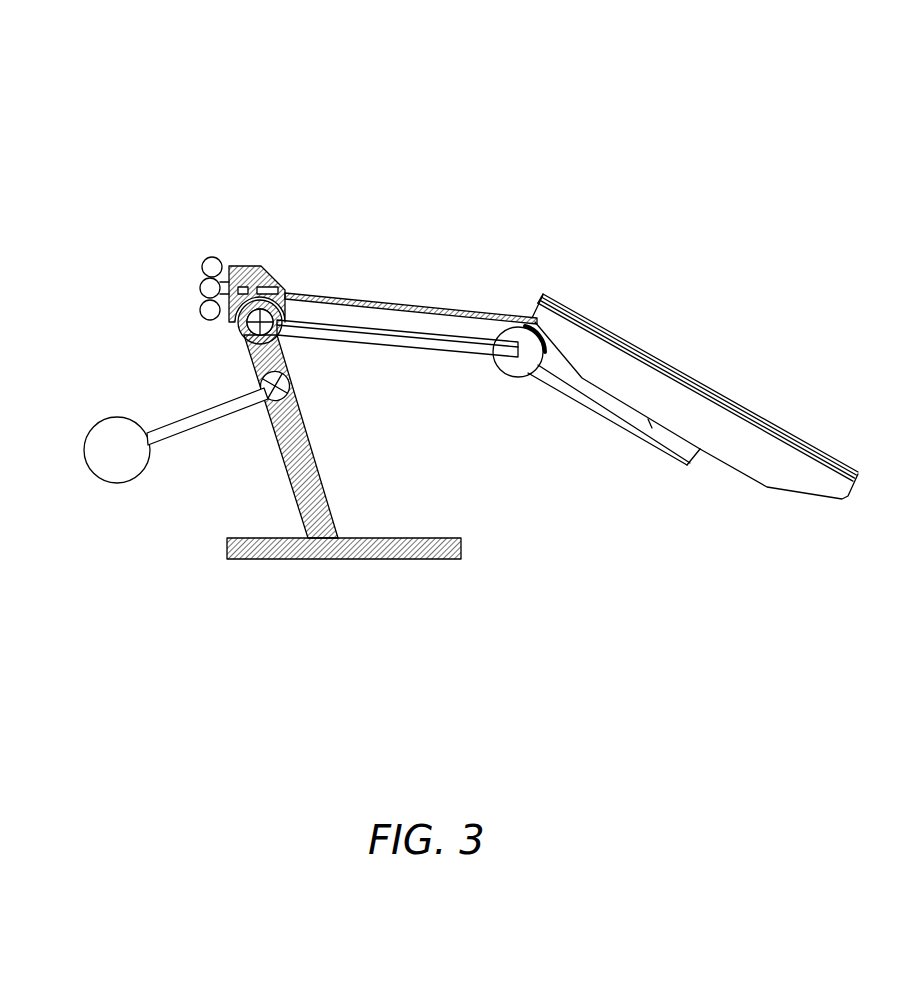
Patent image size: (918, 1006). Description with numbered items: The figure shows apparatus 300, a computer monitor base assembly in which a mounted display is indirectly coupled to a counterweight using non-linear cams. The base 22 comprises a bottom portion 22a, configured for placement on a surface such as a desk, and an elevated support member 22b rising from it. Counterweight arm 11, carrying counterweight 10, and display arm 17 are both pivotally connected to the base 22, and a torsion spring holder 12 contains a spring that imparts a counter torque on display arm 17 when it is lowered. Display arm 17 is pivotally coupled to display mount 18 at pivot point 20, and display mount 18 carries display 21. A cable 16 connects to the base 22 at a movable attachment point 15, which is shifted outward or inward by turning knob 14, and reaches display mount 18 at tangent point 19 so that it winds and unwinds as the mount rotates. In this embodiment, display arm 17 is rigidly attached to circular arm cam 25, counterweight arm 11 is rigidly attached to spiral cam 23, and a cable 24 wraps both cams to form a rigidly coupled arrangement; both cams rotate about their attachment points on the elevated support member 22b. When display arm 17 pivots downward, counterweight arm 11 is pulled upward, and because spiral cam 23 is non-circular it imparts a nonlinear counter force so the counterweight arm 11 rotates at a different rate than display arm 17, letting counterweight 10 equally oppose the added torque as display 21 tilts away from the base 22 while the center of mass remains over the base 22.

The apparatus 300 is at (507, 105).
The counterweight 10 is at (105, 483).
The counterweight arm 11 is at (157, 430).
The torsion spring holder 12 is at (280, 332).
The knob 14 is at (202, 277).
The movable attachment point 15 is at (255, 267).
The cable 16 is at (385, 302).
The display arm 17 is at (445, 330).
The display mount 18 is at (653, 443).
The tangent point 19 is at (532, 318).
The pivot point 20 is at (512, 377).
The display 21 is at (694, 378).
The base 22 is at (272, 430).
The bottom portion 22a is at (462, 550).
The elevated support member 22b is at (323, 484).
The spiral cam 23 is at (292, 386).
The cable 24 is at (236, 325).
The circular arm cam 25 is at (275, 277).